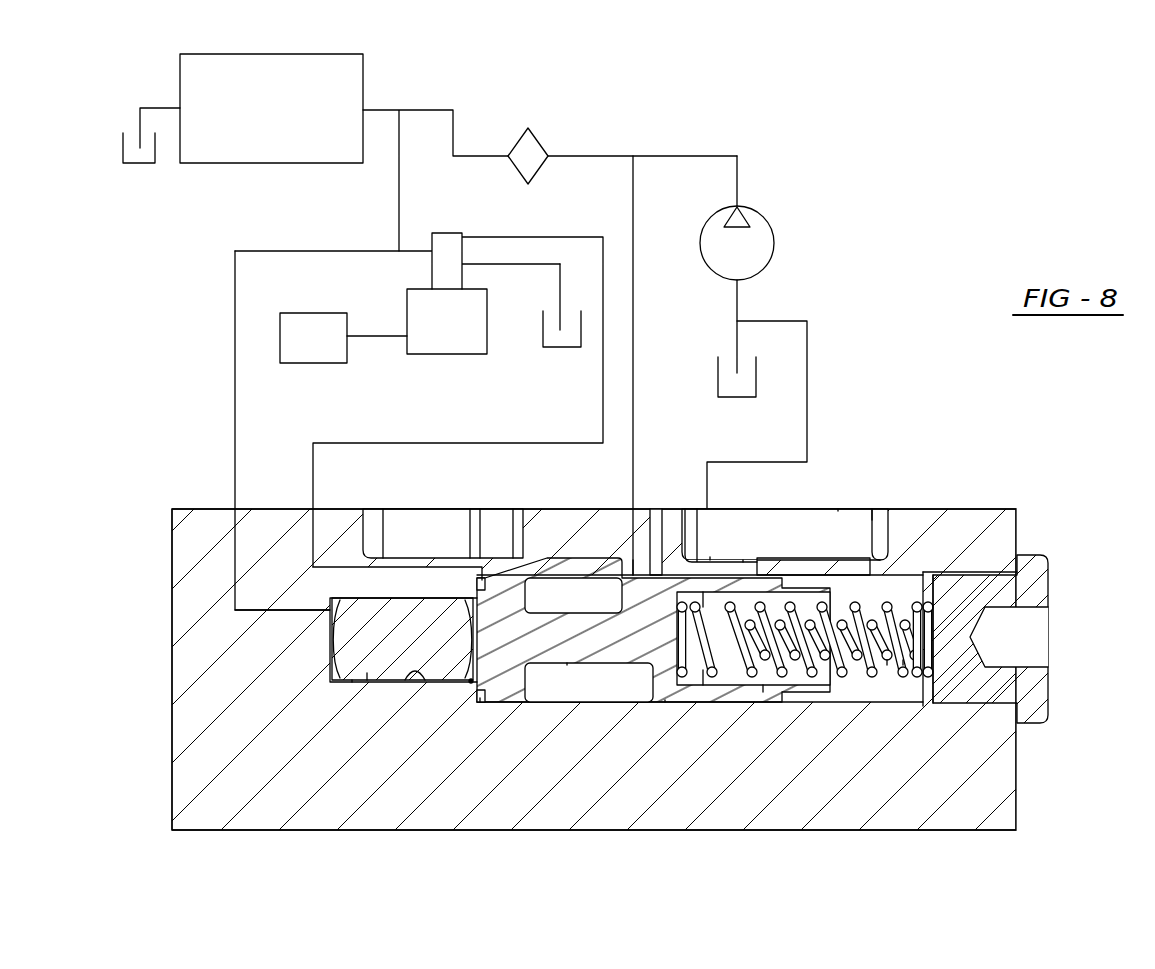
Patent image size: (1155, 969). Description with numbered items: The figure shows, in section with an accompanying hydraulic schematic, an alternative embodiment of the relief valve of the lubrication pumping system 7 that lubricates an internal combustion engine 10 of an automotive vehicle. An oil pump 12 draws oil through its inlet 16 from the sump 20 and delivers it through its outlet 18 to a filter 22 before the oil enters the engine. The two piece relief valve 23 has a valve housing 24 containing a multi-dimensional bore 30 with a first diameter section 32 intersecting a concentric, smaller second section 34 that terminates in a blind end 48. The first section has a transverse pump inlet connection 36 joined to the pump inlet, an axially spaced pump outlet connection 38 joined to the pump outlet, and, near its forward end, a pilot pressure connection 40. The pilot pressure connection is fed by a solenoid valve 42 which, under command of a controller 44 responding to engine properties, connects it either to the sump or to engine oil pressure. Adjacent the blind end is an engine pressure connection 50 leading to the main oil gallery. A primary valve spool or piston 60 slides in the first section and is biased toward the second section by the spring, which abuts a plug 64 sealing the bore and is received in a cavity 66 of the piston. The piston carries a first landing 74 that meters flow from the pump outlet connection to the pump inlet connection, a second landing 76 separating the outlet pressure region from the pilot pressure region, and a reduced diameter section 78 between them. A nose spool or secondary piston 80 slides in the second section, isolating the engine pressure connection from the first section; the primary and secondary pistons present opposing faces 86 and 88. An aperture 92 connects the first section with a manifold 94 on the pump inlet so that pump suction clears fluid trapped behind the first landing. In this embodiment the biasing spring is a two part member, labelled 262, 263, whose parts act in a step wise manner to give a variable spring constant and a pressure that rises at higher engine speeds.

The lubrication pumping system 7 is at (752, 114).
The internal combustion engine 10 is at (215, 163).
The oil pump 12 is at (773, 232).
The pump inlet 16 is at (737, 280).
The pump outlet 18 is at (737, 207).
The sump 20 is at (123, 150).
The filter 22 is at (530, 128).
The relief valve 23 is at (838, 508).
The valve housing 24 is at (1016, 520).
The multi-dimensional bore 30 is at (853, 697).
The first diameter section 32 is at (603, 702).
The second section 34 is at (367, 673).
The pump inlet connection 36 is at (710, 557).
The pump outlet connection 38 is at (633, 573).
The pilot pressure connection 40 is at (486, 578).
The solenoid valve 42 is at (407, 297).
The controller 44 is at (318, 363).
The blind end 48 is at (338, 683).
The engine pressure connection 50 is at (332, 610).
The primary valve spool or piston 60 is at (665, 702).
The plug 64 is at (1040, 562).
The cavity 66 is at (763, 690).
The first landing 74 is at (743, 560).
The second landing 76 is at (485, 702).
The reduced diameter section 78 is at (567, 663).
The nose spool or secondary piston 80 is at (352, 682).
The face of primary piston 86 is at (472, 681).
The face of secondary piston 88 is at (415, 668).
The aperture 92 is at (877, 565).
The manifold 94 is at (878, 510).
The conic biasing spring 262 is at (903, 660).
The spring seat 263 is at (887, 660).